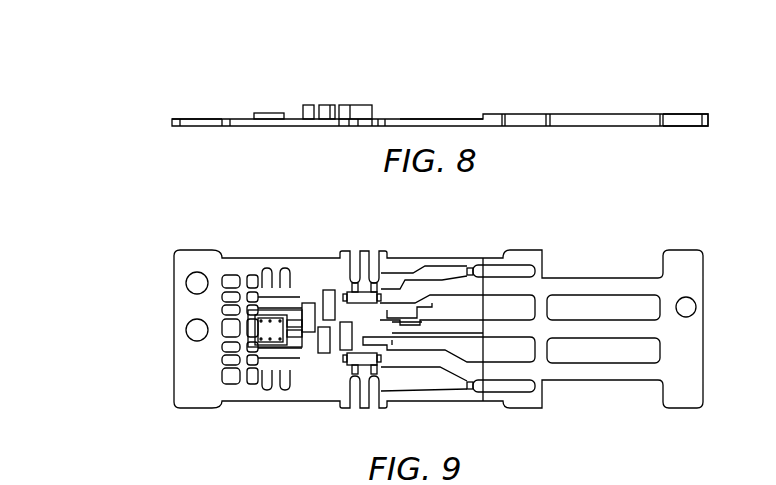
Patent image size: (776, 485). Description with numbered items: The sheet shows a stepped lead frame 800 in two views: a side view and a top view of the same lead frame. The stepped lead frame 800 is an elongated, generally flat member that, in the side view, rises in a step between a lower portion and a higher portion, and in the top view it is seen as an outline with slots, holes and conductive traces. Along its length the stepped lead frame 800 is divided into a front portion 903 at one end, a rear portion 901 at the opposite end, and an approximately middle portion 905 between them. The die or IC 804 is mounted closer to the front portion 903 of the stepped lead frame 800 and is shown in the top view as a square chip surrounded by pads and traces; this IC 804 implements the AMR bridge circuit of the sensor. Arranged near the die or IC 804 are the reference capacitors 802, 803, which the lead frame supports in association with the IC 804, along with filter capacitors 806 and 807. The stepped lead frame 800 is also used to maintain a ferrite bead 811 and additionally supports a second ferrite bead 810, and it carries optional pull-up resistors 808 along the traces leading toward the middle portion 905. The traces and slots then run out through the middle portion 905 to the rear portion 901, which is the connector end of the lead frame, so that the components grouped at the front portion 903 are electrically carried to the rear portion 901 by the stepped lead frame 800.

In FIG. 8, the stepped lead frame 800 is at (589, 109).
In FIG. 9, the stepped lead frame 800 is at (571, 417).
In FIG. 8, the reference capacitor 802 is at (307, 105).
In FIG. 9, the reference capacitor 802 is at (308, 300).
In FIG. 8, the reference capacitor 803 is at (331, 105).
In FIG. 9, the reference capacitor 803 is at (321, 353).
In FIG. 8, the die or IC 804 is at (264, 112).
In FIG. 9, the die or IC 804 is at (247, 327).
In FIG. 9, the filter capacitor 806 is at (330, 289).
In FIG. 9, the filter capacitor 807 is at (345, 352).
In FIG. 9, the pull-up resistors 808 is at (396, 346).
In FIG. 9, the ferrite bead 810 is at (364, 284).
In FIG. 8, the ferrite bead 811 is at (370, 105).
In FIG. 9, the ferrite bead 811 is at (364, 375).
In FIG. 8, the rear portion 901 is at (690, 114).
In FIG. 9, the rear portion 901 is at (693, 278).
In FIG. 8, the front portion 903 is at (190, 118).
In FIG. 9, the front portion 903 is at (195, 378).
In FIG. 8, the middle portion 905 is at (440, 119).
In FIG. 9, the middle portion 905 is at (460, 396).